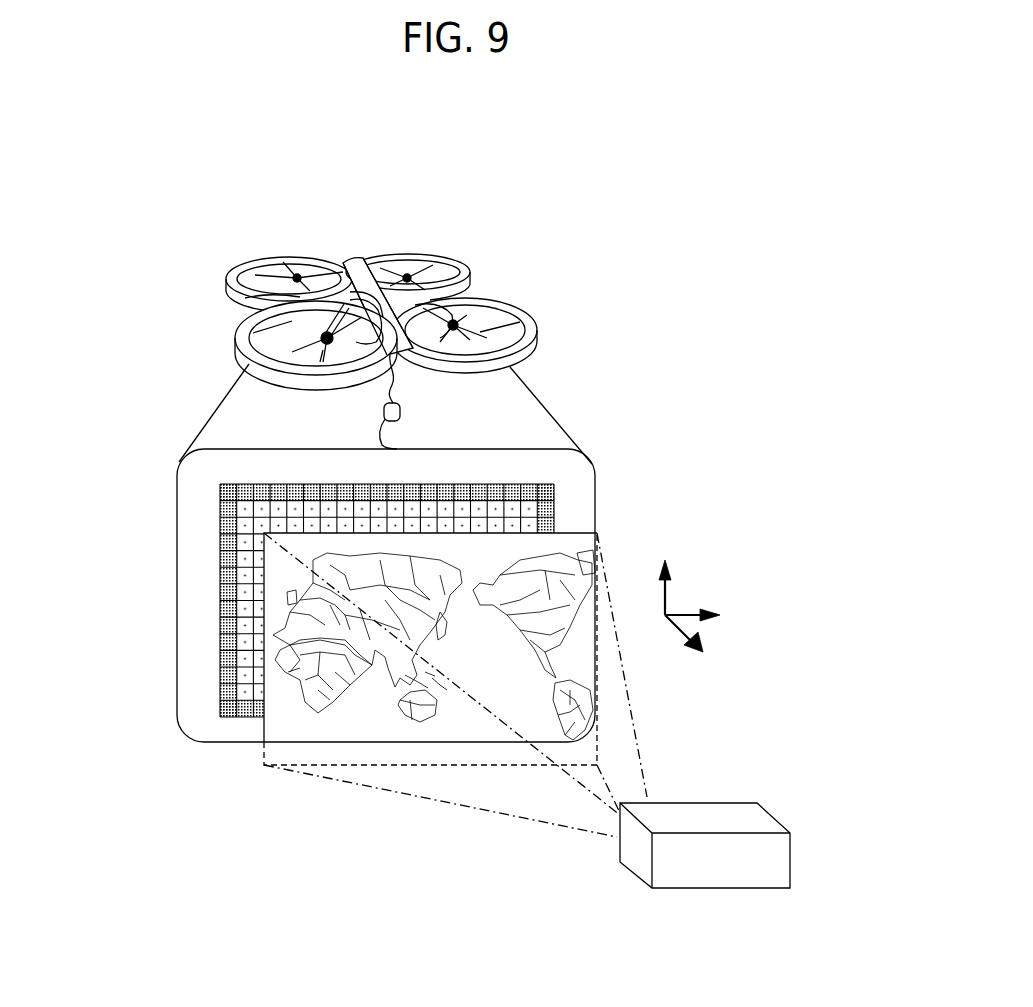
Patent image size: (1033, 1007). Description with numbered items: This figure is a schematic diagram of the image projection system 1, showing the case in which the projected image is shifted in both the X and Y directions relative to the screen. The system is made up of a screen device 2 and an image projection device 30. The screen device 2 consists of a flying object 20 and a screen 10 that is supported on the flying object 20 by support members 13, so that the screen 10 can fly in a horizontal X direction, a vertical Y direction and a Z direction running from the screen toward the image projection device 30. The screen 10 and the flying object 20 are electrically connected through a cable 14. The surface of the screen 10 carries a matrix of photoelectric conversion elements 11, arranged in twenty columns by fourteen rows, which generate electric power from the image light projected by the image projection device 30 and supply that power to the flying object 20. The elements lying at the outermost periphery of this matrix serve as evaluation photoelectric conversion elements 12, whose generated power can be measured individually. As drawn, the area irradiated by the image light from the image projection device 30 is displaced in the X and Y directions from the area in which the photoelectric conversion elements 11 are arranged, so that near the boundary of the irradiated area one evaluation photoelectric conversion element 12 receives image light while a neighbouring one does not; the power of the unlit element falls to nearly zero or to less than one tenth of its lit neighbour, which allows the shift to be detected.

The image projection system 1 is at (684, 264).
The screen device 2 is at (622, 285).
The screen 10 is at (593, 462).
The photoelectric conversion elements 11 is at (231, 543).
The evaluation photoelectric conversion elements 12 is at (221, 513).
The support members 13 is at (548, 412).
The cable 14 is at (401, 411).
The flying object 20 is at (536, 316).
The image projection device 30 is at (737, 803).